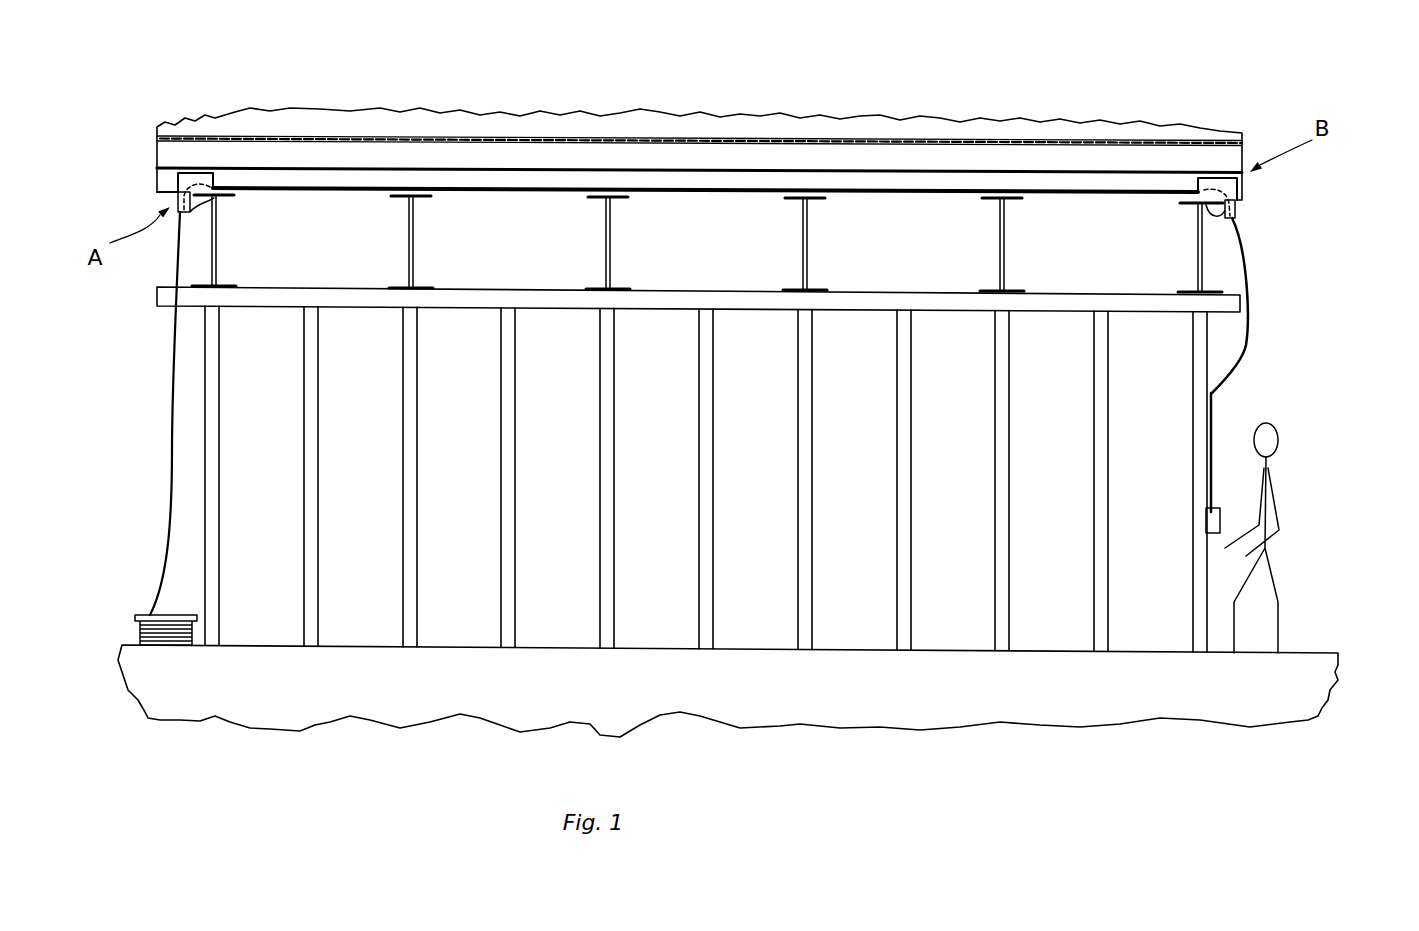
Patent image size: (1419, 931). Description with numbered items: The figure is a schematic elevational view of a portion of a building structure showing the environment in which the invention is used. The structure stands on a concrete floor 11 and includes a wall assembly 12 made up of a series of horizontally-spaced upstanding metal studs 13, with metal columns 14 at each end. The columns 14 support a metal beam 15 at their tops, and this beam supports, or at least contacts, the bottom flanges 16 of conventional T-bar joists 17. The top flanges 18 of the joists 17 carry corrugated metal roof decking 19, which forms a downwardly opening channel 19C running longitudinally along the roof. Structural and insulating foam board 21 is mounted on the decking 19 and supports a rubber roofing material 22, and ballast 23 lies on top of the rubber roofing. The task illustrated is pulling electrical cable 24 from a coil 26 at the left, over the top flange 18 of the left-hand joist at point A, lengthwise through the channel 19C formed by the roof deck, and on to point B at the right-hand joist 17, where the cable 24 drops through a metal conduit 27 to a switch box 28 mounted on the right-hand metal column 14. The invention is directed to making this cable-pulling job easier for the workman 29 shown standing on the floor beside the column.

The concrete floor 11 is at (1322, 645).
The wall assembly 12 is at (548, 594).
The metal studs 13 is at (403, 447).
The metal columns 14 is at (204, 475).
The metal beam 15 is at (1027, 305).
The bottom flanges 16 is at (225, 288).
The T-bar joists 17 is at (217, 208).
The top flanges 18 is at (217, 190).
The corrugated metal roof decking 19 is at (347, 158).
The downwardly opening channel 19C is at (172, 157).
The structural and insulating foam board 21 is at (993, 153).
The rubber roofing material 22 is at (1057, 138).
The ballast 23 is at (947, 125).
The electrical cable 24 is at (170, 414).
The coil 26 is at (135, 632).
The metal conduit 27 is at (1213, 400).
The switch box 28 is at (1205, 520).
The workman 29 is at (1278, 506).